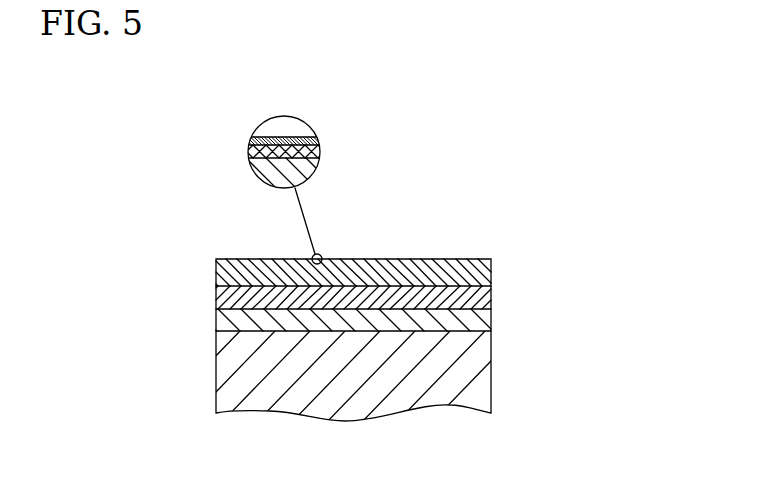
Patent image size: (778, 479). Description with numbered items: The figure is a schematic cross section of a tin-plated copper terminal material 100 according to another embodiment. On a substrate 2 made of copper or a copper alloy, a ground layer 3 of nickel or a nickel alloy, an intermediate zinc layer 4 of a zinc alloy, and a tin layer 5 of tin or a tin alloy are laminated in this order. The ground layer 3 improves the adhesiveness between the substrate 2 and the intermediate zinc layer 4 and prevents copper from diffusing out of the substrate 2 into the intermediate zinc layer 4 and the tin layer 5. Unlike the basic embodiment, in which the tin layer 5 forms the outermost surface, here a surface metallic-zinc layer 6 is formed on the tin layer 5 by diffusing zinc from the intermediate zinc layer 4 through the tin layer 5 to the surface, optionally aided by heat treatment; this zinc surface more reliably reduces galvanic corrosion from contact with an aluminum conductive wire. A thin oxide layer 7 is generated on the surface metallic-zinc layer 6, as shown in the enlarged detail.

The tin-plated copper terminal material 100 is at (461, 212).
The substrate 2 is at (215, 382).
The ground layer 3 is at (215, 322).
The intermediate zinc layer 4 is at (215, 300).
The tin layer 5 is at (215, 277).
The surface metallic-zinc layer 6 is at (321, 152).
The oxide layer 7 is at (320, 141).